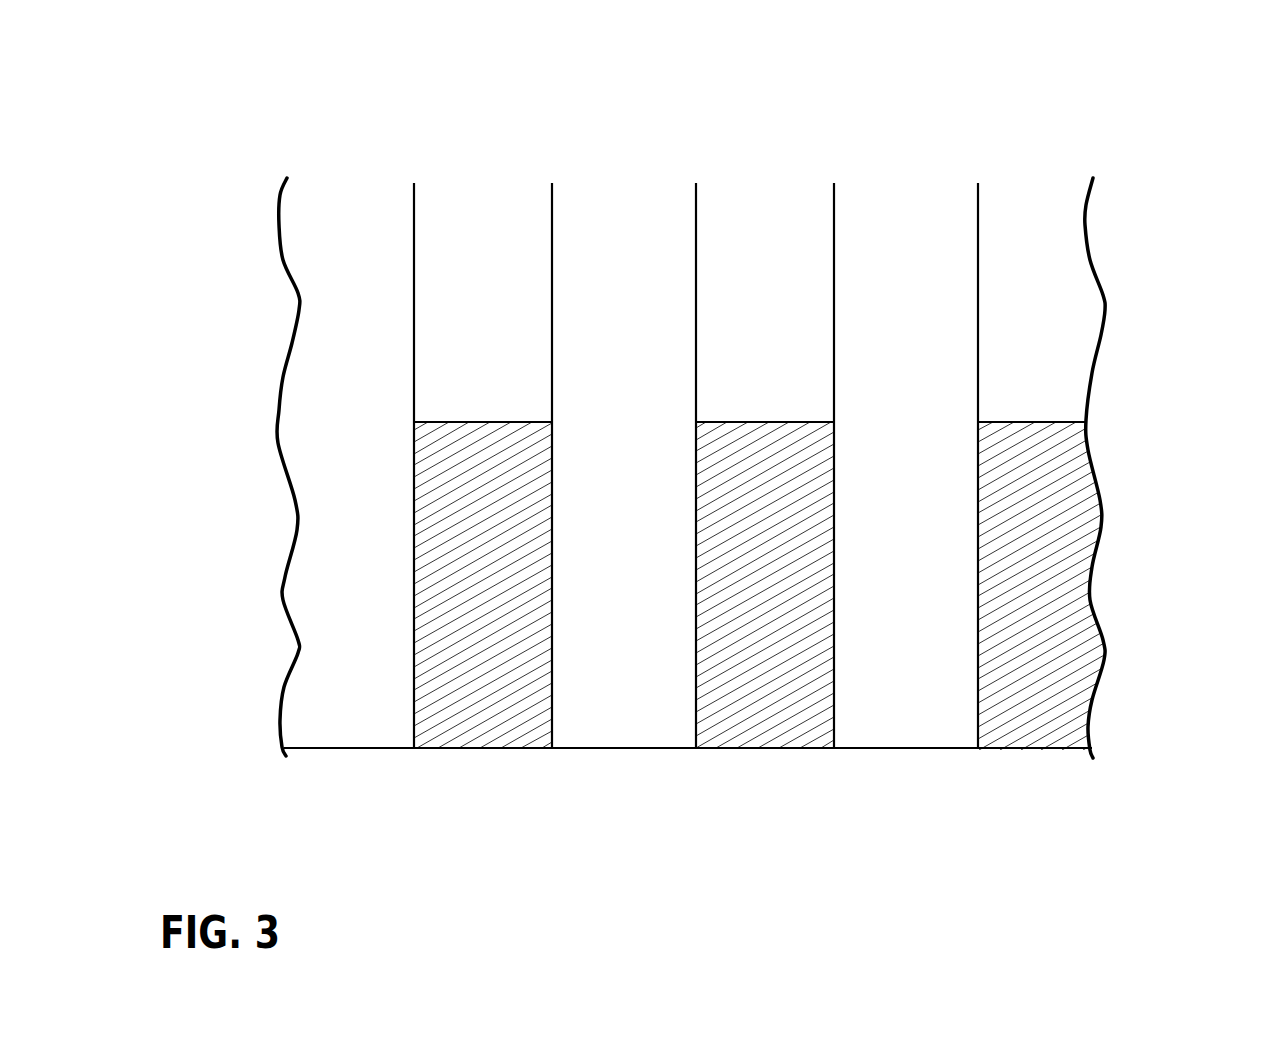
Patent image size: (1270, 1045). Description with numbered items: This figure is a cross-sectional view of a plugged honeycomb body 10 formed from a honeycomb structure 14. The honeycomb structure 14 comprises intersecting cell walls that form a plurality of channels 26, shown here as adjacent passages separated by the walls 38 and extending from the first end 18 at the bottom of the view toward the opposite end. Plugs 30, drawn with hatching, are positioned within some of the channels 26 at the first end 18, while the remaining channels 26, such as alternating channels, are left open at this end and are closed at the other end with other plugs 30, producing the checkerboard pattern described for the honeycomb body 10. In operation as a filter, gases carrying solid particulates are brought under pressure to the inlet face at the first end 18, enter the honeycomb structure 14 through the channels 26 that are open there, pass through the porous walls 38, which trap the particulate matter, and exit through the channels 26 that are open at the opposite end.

The honeycomb body 10 is at (1132, 80).
The honeycomb structure 14 is at (1078, 175).
The first end 18 is at (623, 777).
The channels 26 is at (916, 698).
The plugs 30 is at (500, 713).
The walls 38 is at (978, 333).